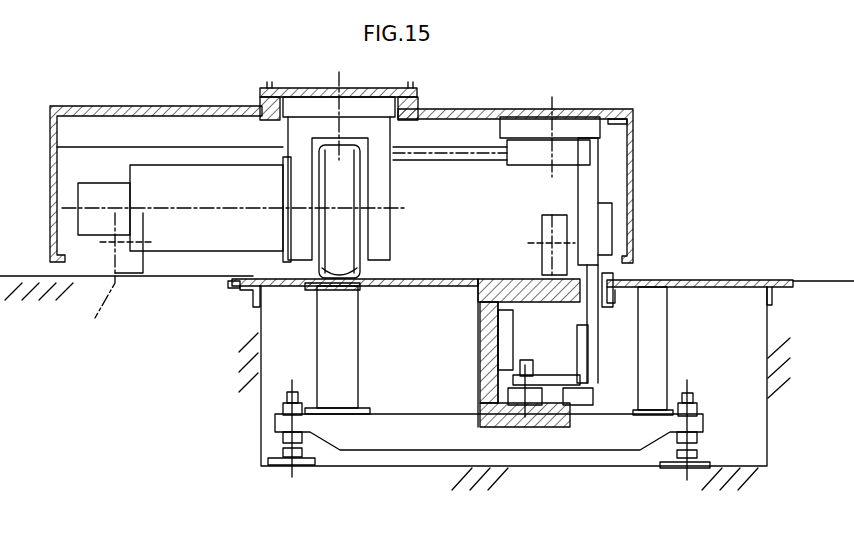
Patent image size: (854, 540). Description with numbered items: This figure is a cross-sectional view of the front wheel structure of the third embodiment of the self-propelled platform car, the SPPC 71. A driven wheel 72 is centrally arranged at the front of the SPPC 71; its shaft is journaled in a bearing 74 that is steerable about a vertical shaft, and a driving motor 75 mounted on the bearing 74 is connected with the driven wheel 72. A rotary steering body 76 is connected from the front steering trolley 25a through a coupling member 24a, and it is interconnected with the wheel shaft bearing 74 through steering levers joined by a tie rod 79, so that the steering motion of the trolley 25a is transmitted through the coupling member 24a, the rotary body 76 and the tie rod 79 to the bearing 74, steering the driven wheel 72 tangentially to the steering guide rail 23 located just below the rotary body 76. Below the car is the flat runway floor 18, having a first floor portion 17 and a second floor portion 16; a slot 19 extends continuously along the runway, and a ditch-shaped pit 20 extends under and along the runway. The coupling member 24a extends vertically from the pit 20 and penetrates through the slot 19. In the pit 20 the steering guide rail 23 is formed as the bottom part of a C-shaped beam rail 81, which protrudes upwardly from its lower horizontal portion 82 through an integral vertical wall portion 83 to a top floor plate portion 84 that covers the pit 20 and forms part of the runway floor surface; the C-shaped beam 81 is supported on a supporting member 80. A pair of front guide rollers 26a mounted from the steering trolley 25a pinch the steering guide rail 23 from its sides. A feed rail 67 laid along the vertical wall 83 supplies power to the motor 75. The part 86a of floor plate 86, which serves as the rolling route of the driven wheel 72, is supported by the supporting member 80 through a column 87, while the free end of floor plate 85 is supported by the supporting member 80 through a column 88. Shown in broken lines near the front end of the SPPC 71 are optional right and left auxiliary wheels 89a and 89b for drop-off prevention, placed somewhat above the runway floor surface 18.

The SPPC 71 is at (138, 102).
The driving motor 75 is at (185, 178).
The bearing 74 is at (378, 139).
The tie rod 79 is at (458, 148).
The auxiliary wheel 89a is at (548, 225).
The rotary steering body 76 is at (588, 188).
The driven wheel 72 is at (345, 188).
The part of floor plate 86a is at (348, 276).
The second floor portion 16 is at (518, 271).
The floor plate portion 84 is at (508, 283).
The slot 19 is at (605, 273).
The front coupling member 24a is at (593, 318).
The steering guide rail 23 is at (568, 363).
The vertical wall portion 83 is at (487, 320).
The C-shaped beam rail 81 is at (470, 348).
The feed rail 67 is at (555, 333).
The front steering trolley 25a is at (513, 357).
The lower horizontal portion 82 is at (525, 417).
The runway floor 18 is at (258, 272).
The floor plate 86 is at (287, 288).
The first floor portion 17 is at (95, 273).
The auxiliary wheel 89b is at (130, 262).
The column 87 is at (327, 348).
The column 88 is at (653, 373).
The floor plate 85 is at (695, 283).
The pit 20 is at (745, 300).
The supporting member 80 is at (637, 432).
The front guide rollers 26a is at (487, 417).